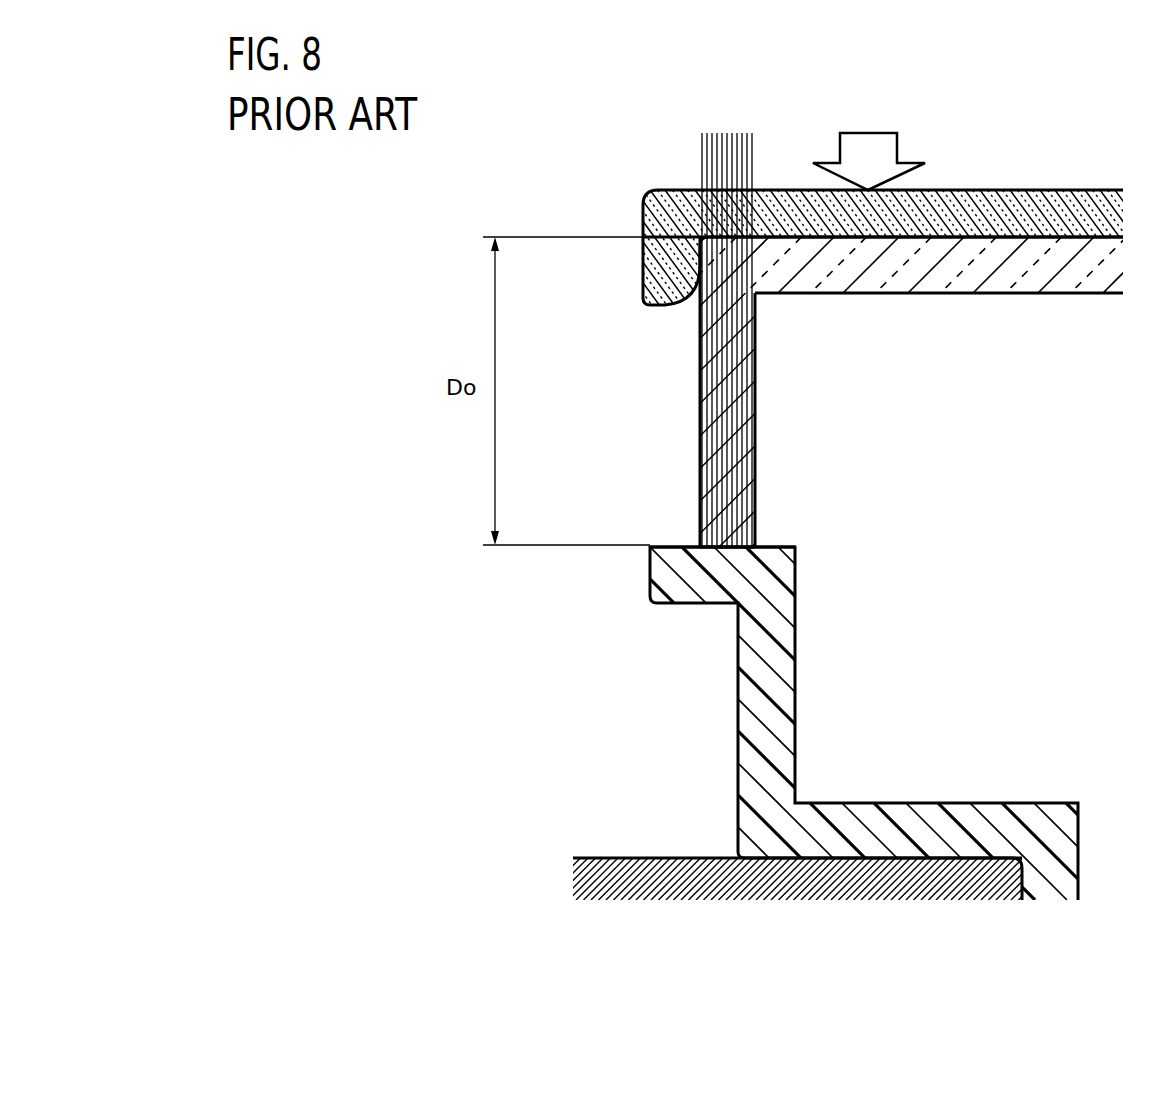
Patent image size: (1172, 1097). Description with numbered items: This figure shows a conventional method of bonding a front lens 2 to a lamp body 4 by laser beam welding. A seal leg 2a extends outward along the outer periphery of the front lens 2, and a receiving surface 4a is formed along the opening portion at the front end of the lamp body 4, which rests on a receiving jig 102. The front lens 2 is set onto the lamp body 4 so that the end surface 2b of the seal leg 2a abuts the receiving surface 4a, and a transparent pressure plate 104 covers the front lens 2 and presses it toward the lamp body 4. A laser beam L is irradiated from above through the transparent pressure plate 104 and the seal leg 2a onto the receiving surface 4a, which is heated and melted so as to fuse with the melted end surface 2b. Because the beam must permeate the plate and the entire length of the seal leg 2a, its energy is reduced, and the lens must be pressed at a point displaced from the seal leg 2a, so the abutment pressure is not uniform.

The front lens 2 is at (947, 307).
The seal leg 2a is at (733, 410).
The end surface 2b is at (723, 550).
The lamp body 4 is at (948, 790).
The receiving surface 4a is at (682, 545).
The receiving jig 102 is at (651, 856).
The transparent pressure plate 104 is at (640, 205).
The laser beam L is at (720, 158).